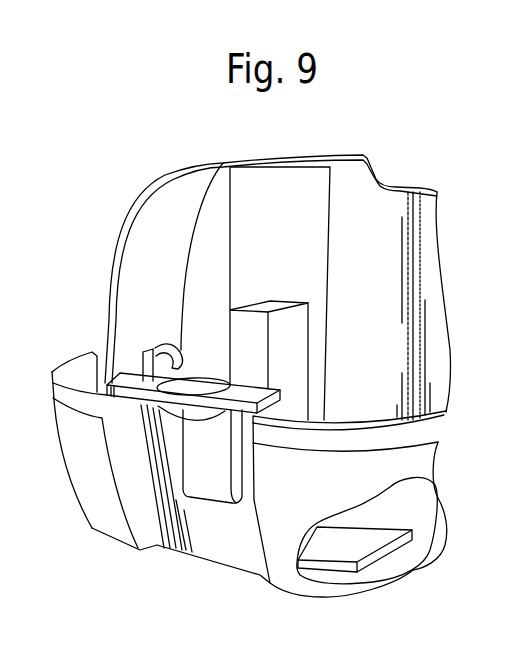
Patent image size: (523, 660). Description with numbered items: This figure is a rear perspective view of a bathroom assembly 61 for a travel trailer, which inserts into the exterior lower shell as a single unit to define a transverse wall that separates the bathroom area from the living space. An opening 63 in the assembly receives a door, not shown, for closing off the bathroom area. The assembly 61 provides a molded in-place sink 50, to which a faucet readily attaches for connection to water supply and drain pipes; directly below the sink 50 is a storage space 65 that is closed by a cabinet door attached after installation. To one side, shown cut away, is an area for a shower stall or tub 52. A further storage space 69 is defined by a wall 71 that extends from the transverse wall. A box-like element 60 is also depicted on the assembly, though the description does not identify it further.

The sink 50 is at (240, 383).
The shower stall or tub 52 is at (343, 561).
The storage box 60 is at (253, 303).
The bathroom assembly 61 is at (122, 236).
The opening 63 is at (282, 193).
The storage space 65 is at (212, 462).
The storage space 69 is at (92, 378).
The wall 71 is at (162, 202).